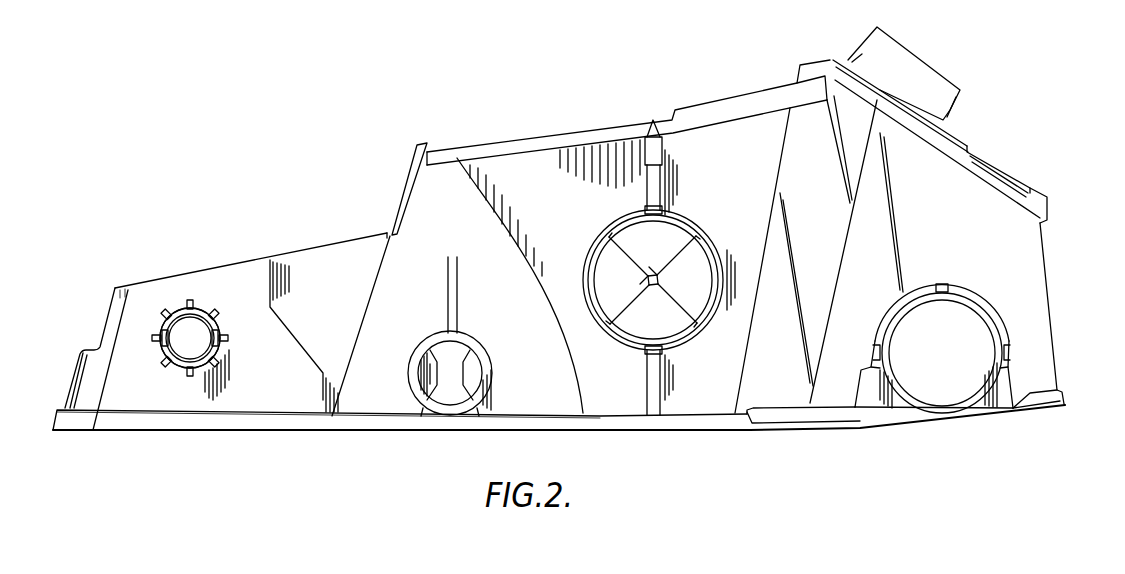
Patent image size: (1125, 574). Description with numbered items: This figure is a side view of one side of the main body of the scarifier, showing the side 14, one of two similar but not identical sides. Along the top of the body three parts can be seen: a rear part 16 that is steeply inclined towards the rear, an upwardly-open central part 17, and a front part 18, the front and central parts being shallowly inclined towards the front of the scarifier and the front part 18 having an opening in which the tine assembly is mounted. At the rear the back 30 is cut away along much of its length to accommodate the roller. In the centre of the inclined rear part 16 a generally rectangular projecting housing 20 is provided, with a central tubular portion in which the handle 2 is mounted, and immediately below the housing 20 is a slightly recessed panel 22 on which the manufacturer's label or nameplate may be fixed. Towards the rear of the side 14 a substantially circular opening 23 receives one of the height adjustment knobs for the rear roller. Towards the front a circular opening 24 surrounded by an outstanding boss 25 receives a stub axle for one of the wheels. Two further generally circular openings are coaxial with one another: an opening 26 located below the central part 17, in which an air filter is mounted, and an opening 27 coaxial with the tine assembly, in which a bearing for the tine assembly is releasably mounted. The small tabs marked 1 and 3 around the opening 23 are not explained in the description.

The side tab of bearing block 1 is at (1010, 353).
The handle 2 is at (942, 283).
The side tab of bearing block 3 is at (873, 352).
The side 14 is at (370, 235).
The rear part 16 is at (970, 136).
The central part 17 is at (627, 113).
The front part 18 is at (207, 268).
The projecting housing 20 is at (913, 68).
The recessed panel 22 is at (997, 167).
The circular opening 23 is at (933, 383).
The circular opening 24 is at (187, 350).
The outstanding boss 25 is at (180, 313).
The opening 26 is at (672, 237).
The opening 27 is at (452, 383).
The back 30 is at (1068, 378).